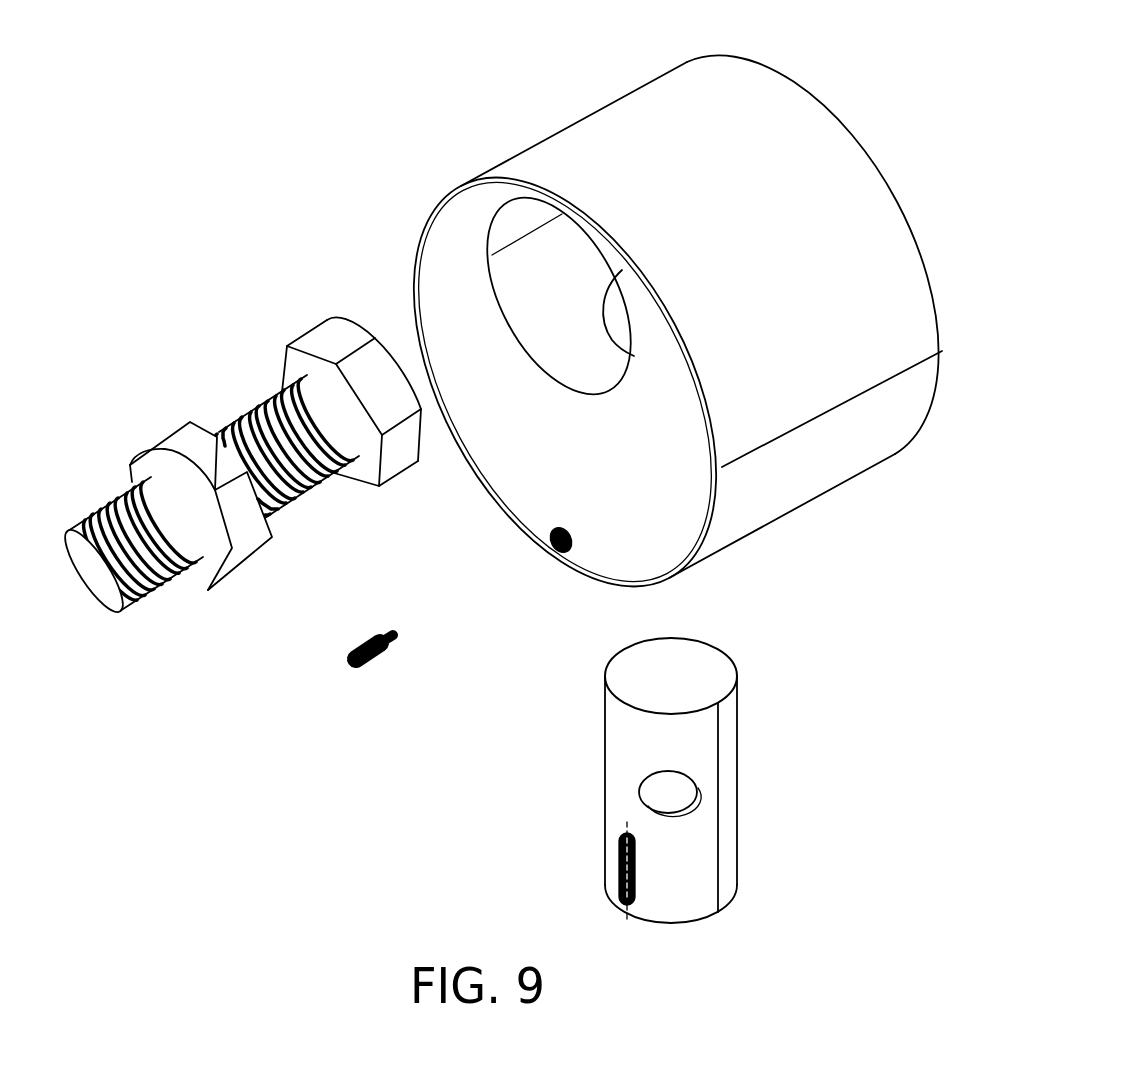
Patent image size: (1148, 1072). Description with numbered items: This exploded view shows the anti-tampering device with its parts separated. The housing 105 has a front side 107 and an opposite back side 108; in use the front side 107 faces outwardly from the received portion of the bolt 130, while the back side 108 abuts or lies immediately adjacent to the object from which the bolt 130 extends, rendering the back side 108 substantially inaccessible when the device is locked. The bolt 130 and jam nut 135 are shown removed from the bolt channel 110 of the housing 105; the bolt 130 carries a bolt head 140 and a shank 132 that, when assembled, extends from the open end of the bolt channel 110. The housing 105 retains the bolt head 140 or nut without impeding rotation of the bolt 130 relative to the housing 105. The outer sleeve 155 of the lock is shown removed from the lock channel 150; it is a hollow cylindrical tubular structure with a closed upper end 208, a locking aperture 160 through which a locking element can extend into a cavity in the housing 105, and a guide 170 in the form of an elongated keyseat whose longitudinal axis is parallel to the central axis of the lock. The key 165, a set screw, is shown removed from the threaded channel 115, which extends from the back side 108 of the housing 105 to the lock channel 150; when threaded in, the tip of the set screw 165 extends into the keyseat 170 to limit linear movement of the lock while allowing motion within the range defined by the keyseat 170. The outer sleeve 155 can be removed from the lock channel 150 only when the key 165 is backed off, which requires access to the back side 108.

The housing 105 is at (598, 112).
The front side 107 is at (883, 158).
The back side 108 is at (663, 527).
The bolt channel 110 is at (560, 333).
The threaded channel 115 is at (553, 549).
The bolt 130 is at (153, 593).
The shank 132 is at (92, 578).
The jam nut 135 is at (190, 457).
The bolt head 140 is at (326, 322).
The lock channel 150 is at (618, 326).
The outer sleeve 155 is at (605, 742).
The locking aperture 160 is at (670, 786).
The key 165 is at (373, 663).
The guide 170 is at (622, 887).
The closed upper end 208 is at (678, 688).